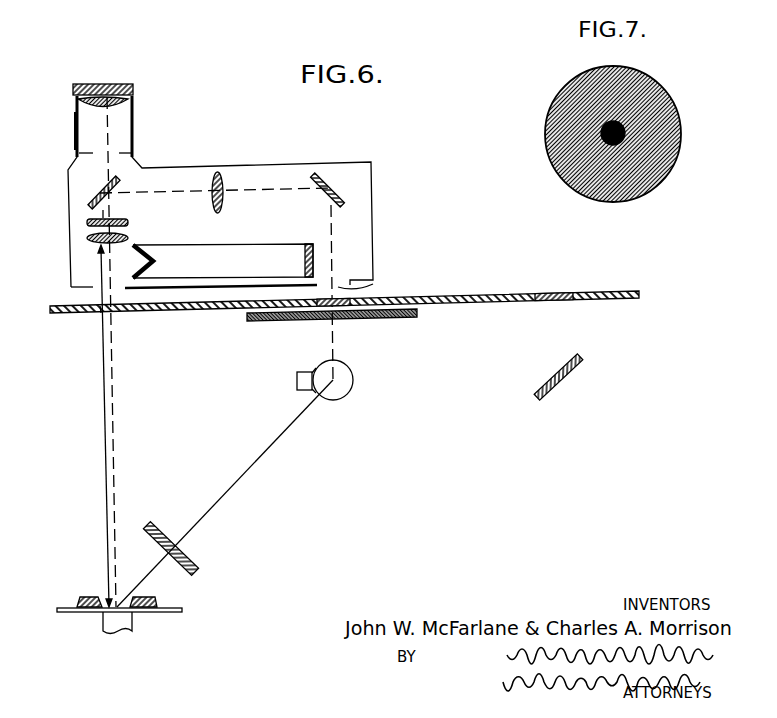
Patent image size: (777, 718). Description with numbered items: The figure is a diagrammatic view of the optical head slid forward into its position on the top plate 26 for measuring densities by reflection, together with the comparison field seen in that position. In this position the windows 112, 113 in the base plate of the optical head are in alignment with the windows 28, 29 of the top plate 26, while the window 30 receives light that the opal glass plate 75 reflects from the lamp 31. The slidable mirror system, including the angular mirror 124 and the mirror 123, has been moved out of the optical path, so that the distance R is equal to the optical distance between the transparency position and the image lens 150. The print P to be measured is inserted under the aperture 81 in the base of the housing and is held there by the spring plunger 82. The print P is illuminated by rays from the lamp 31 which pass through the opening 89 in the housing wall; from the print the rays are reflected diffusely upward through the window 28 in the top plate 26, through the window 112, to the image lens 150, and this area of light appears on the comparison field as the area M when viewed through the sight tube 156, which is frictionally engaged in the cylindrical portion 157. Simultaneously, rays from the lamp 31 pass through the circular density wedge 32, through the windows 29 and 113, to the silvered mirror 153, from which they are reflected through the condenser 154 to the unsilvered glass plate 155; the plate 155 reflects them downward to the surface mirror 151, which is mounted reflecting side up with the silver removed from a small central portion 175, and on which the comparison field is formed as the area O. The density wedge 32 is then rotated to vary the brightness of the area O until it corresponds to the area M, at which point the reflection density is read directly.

In FIG. 6, the sight tube 156 is at (133, 109).
In FIG. 6, the cylindrical portion 157 is at (76, 135).
In FIG. 6, the unsilvered glass plate 155 is at (97, 193).
In FIG. 6, the small central portion 175 is at (104, 219).
In FIG. 6, the surface mirror 151 is at (128, 221).
In FIG. 6, the lens 150 is at (87, 238).
In FIG. 6, the condenser 154 is at (223, 182).
In FIG. 6, the silvered mirror 153 is at (318, 178).
In FIG. 6, the mirror 123 is at (308, 247).
In FIG. 6, the angular mirror 124 is at (153, 262).
In FIG. 6, the window 113 is at (372, 284).
In FIG. 6, the window 112 is at (98, 290).
In FIG. 6, the top plate 26 is at (50, 310).
In FIG. 6, the window 28 is at (100, 315).
In FIG. 6, the window 29 is at (316, 318).
In FIG. 6, the window 30 is at (558, 293).
In FIG. 6, the circular density wedge 32 is at (385, 320).
In FIG. 6, the lamp 31 is at (345, 396).
In FIG. 6, the opal glass plate 75 is at (567, 380).
In FIG. 6, the distance R is at (99, 426).
In FIG. 6, the opening 89 is at (182, 553).
In FIG. 6, the aperture 81 is at (125, 600).
In FIG. 6, the print P is at (180, 612).
In FIG. 6, the spring plunger 82 is at (103, 628).
In FIG. 7, the light area O is at (663, 175).
In FIG. 7, the light area M is at (603, 142).